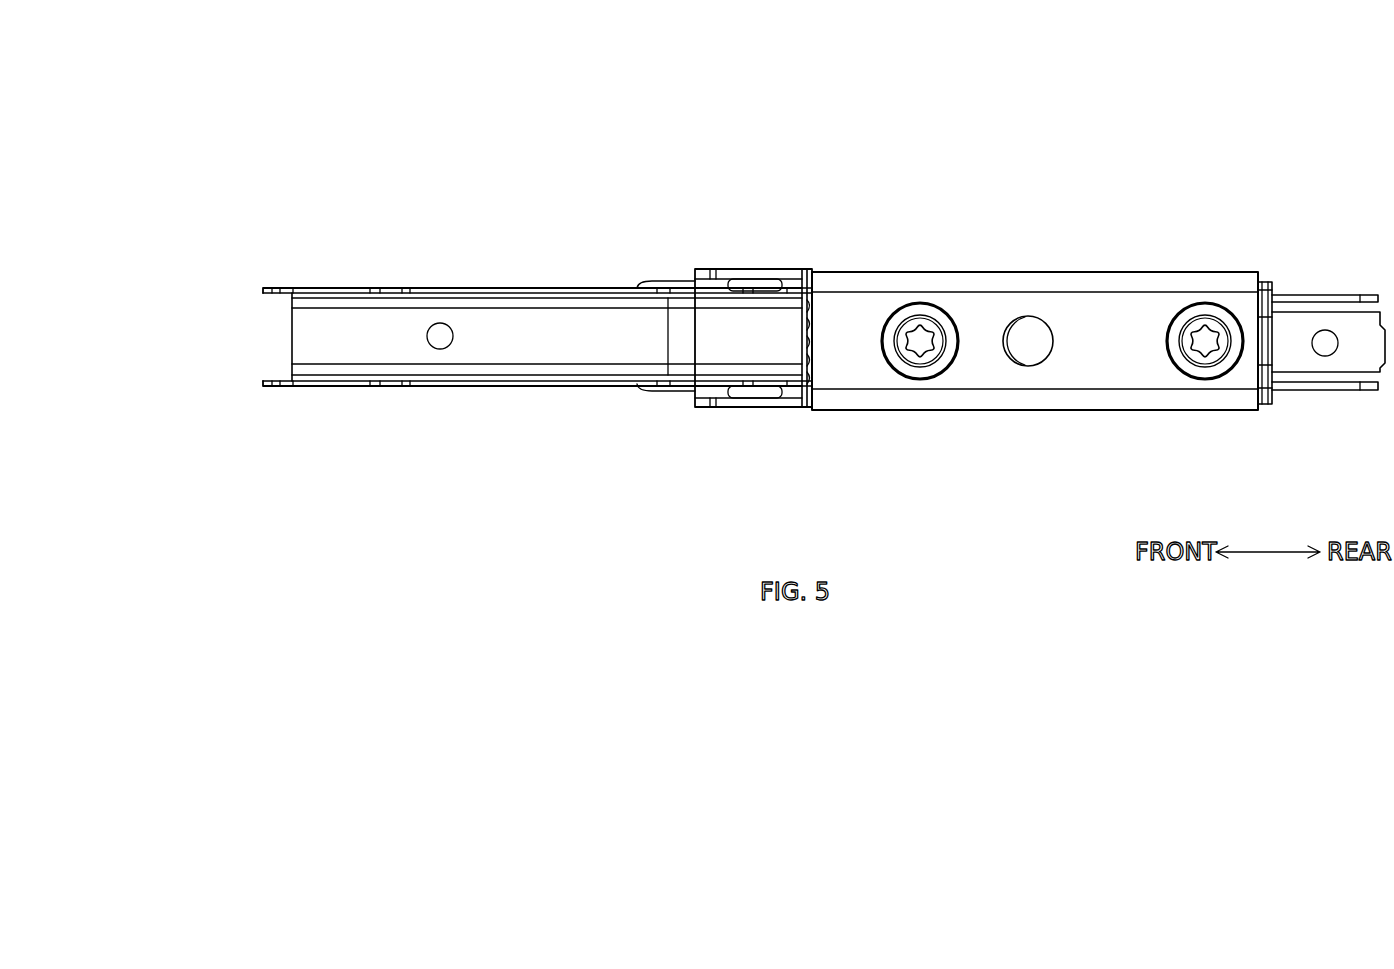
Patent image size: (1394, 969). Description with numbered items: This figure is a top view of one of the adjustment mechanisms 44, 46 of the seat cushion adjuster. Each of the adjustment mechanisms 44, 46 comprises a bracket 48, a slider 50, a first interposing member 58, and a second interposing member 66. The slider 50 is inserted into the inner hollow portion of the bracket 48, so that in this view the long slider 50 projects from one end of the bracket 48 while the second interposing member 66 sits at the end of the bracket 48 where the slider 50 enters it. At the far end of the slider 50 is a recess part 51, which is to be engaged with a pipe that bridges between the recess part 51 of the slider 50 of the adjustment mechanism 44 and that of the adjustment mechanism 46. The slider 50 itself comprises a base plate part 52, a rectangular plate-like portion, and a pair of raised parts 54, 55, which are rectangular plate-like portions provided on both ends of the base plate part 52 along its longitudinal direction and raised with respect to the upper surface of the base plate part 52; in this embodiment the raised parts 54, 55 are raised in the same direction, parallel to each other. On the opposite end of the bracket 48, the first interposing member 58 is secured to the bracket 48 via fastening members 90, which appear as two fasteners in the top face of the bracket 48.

The adjustment mechanism 44 is at (758, 279).
The adjustment mechanism 46 is at (758, 346).
The bracket 48 is at (1033, 282).
The slider 50 is at (466, 315).
The recess part 51 is at (336, 277).
The base plate part 52 is at (497, 291).
The raised part 54 is at (497, 402).
The raised part 55 is at (263, 290).
The first interposing member 58 is at (1268, 289).
The second interposing member 66 is at (792, 403).
The fastening member 90 is at (927, 380).